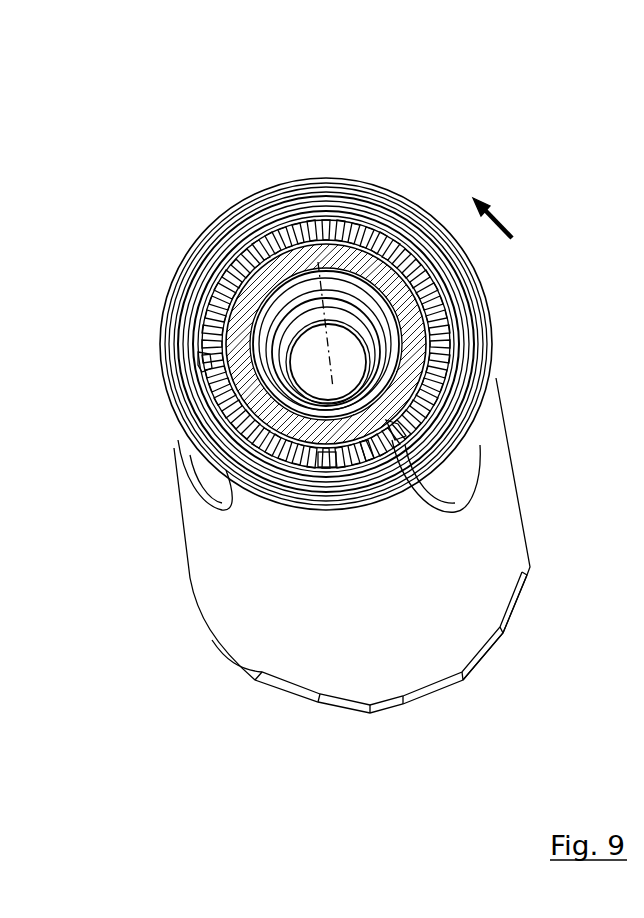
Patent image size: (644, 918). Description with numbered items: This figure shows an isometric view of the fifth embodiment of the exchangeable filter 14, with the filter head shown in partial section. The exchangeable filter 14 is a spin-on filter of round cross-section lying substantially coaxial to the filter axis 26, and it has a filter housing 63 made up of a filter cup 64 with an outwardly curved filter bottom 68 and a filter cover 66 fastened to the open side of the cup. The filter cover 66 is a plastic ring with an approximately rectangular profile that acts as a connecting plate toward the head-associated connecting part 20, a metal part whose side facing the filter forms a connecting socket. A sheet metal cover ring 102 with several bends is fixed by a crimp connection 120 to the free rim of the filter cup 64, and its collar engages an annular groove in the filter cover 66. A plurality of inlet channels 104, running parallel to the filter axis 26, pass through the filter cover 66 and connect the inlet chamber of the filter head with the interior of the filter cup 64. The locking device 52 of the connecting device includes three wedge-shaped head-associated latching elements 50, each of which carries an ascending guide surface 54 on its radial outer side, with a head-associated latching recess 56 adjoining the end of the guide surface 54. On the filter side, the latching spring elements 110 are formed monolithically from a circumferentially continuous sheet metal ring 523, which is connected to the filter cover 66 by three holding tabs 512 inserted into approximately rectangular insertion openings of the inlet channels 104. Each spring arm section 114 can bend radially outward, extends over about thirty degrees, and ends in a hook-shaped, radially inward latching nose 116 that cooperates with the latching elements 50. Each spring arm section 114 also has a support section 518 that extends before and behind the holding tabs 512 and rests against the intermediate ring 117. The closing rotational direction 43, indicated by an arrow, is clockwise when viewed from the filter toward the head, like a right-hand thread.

The exchangeable filter 14 is at (134, 108).
The head-associated connecting part 20 is at (251, 273).
The filter axis 26 is at (295, 182).
The closing rotational direction 43 is at (497, 216).
The head-associated latching element 50 is at (376, 249).
The locking device 52 is at (200, 360).
The guide surface 54 is at (397, 250).
The head-associated latching recess 56 is at (364, 244).
The filter housing 63 is at (290, 662).
The filter cup 64 is at (193, 590).
The filter cover 66 is at (231, 419).
The filter bottom 68 is at (462, 680).
The sheet metal cover ring 102 is at (249, 194).
The inlet channel 104 is at (218, 500).
The latching spring element 110 is at (365, 467).
The spring arm section 114 is at (430, 482).
The latching nose 116 is at (397, 427).
The intermediate ring 117 is at (453, 298).
The crimp connection 120 is at (215, 238).
The holding tab 512 is at (217, 292).
The support section 518 is at (342, 470).
The sheet metal ring 523 is at (247, 230).